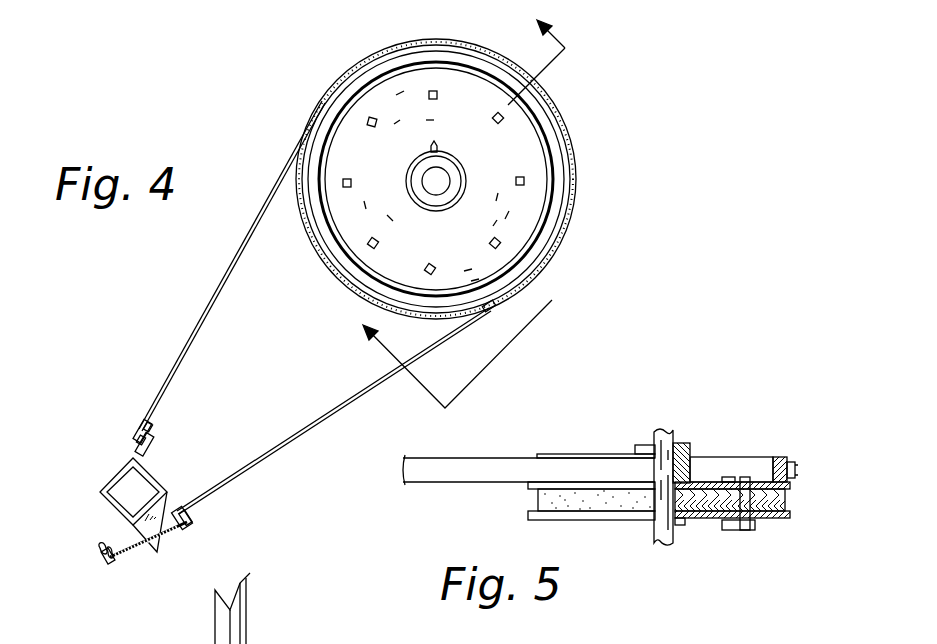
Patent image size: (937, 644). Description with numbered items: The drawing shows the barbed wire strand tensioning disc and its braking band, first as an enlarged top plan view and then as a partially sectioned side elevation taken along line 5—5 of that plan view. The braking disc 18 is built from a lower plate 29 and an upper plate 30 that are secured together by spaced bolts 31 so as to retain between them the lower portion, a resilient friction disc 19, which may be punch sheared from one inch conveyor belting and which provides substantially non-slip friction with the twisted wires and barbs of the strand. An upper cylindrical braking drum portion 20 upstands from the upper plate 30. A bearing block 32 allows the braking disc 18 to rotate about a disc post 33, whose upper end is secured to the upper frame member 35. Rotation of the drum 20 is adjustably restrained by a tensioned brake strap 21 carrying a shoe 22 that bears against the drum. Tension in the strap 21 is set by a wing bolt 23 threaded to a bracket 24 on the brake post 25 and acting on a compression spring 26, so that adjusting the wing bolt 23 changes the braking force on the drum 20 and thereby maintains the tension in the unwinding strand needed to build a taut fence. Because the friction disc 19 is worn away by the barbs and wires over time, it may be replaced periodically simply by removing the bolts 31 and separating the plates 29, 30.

In FIG. 4, the section line 5— 5 is at (451, 204).
In FIG. 5, the brake disc 18 is at (728, 440).
In FIG. 5, the lower portion (friction disc) 19 is at (538, 500).
In FIG. 5, the upper cylindrical braking drum portion 20 is at (800, 475).
In FIG. 4, the brake strap 21 is at (262, 170).
In FIG. 5, the brake strap 21 is at (797, 478).
In FIG. 4, the shoe 22 is at (417, 42).
In FIG. 5, the shoe 22 is at (785, 460).
In FIG. 4, the wing bolt 23 is at (110, 573).
In FIG. 4, the bracket 24 is at (147, 560).
In FIG. 4, the brake post 25 is at (110, 517).
In FIG. 4, the compression spring 26 is at (123, 557).
In FIG. 5, the lower plate 29 is at (700, 517).
In FIG. 5, the upper plate 30 is at (705, 460).
In FIG. 4, the bolts 31 is at (497, 125).
In FIG. 5, the bolts 31 is at (745, 530).
In FIG. 5, the bearing block 32 is at (635, 450).
In FIG. 5, the disc post 33 is at (653, 432).
In FIG. 4, the upper frame member 35 is at (257, 643).